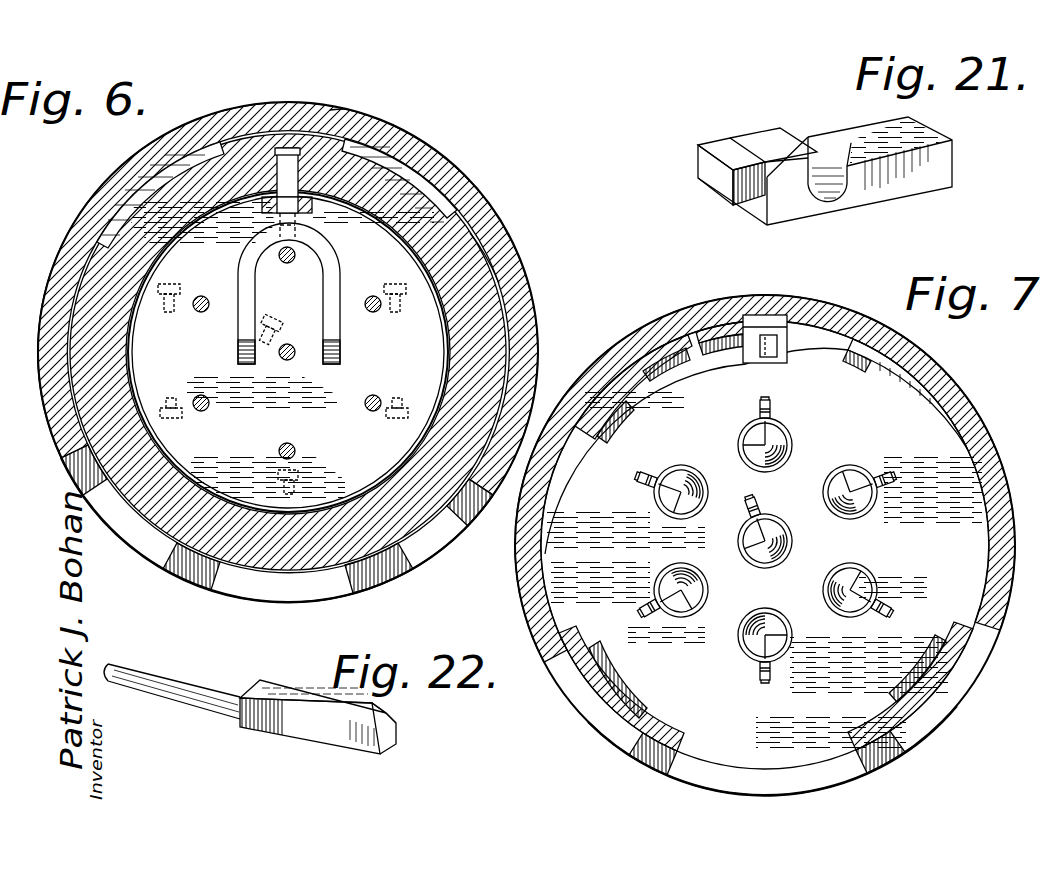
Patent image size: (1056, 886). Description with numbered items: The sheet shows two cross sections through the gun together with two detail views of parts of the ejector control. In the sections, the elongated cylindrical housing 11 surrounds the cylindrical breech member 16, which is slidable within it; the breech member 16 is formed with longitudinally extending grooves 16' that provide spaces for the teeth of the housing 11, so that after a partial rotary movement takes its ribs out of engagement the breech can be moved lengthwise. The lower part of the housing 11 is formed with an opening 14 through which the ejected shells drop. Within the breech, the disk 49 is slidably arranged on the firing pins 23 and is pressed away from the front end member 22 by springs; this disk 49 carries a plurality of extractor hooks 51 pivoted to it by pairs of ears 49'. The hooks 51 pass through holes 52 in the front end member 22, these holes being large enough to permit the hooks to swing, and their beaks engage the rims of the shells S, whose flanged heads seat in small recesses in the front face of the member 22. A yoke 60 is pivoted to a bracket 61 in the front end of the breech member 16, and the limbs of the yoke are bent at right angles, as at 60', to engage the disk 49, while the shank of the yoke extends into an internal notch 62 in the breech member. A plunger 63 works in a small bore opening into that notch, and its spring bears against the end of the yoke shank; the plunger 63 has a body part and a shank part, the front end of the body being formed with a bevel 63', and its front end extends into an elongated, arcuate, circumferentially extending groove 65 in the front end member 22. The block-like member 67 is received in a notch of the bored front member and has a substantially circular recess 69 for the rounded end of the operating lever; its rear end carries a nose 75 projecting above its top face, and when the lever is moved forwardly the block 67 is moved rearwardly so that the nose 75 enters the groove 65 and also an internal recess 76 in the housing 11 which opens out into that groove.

In FIG. 6, the housing 11 is at (536, 306).
In FIG. 7, the housing 11 is at (1010, 545).
In FIG. 6, the opening 14 is at (293, 602).
In FIG. 7, the opening 14 is at (852, 775).
In FIG. 6, the breech member 16 is at (520, 258).
In FIG. 6, the longitudinally extending grooves 16' is at (283, 360).
In FIG. 7, the longitudinally extending grooves 16' is at (771, 540).
In FIG. 7, the front end member 22 is at (920, 658).
In FIG. 6, the firing pins 23 is at (286, 262).
In FIG. 6, the disk 49 is at (358, 352).
In FIG. 6, the pairs of ears 49' is at (285, 389).
In FIG. 7, the extractor hooks 51 is at (662, 606).
In FIG. 7, the holes 52 is at (660, 616).
In FIG. 7, the shells S is at (685, 494).
In FIG. 6, the yoke 60 is at (312, 293).
In FIG. 6, the bent limbs of the yoke 60' is at (293, 347).
In FIG. 6, the bracket 61 is at (312, 207).
In FIG. 6, the internal notch 62 is at (344, 110).
In FIG. 7, the plunger 63 is at (797, 350).
In FIG. 22, the plunger 63 is at (250, 726).
In FIG. 22, the bevel 63' is at (424, 708).
In FIG. 7, the circumferentially extending groove 65 is at (692, 320).
In FIG. 21, the block-like member 67 is at (945, 167).
In FIG. 21, the circular recess 69 is at (840, 204).
In FIG. 21, the nose 75 is at (716, 145).
In FIG. 7, the internal recess 76 is at (767, 313).